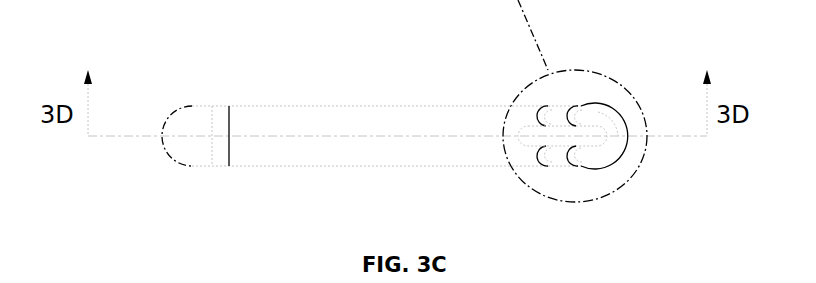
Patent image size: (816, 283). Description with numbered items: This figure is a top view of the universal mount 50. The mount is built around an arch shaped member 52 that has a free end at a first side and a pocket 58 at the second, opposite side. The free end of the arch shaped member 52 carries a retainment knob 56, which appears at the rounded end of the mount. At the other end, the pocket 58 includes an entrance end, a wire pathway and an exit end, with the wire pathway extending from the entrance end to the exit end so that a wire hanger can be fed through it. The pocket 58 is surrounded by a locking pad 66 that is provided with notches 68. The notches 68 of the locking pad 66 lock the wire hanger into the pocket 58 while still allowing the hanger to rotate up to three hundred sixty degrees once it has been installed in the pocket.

The universal mount 50 is at (385, 106).
The arch shaped member 52 is at (293, 106).
The retainment knob 56 is at (175, 108).
The pocket 58 is at (542, 125).
The locking pad 66 is at (602, 164).
The notches 68 is at (586, 127).